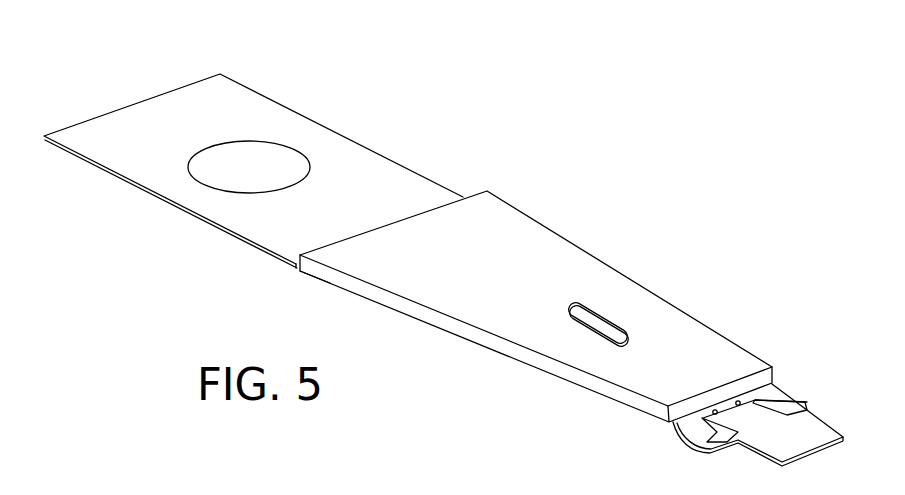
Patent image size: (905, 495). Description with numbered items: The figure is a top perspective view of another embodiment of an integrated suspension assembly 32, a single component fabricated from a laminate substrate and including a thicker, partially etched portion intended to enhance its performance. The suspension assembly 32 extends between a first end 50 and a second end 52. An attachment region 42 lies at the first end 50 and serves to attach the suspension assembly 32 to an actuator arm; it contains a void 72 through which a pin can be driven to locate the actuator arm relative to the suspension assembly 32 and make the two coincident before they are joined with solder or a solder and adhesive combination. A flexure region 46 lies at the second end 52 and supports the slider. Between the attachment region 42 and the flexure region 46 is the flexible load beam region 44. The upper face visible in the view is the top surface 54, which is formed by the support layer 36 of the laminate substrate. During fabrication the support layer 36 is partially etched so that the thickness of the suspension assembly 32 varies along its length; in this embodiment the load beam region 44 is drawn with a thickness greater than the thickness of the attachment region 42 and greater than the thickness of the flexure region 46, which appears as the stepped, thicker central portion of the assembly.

The suspension assembly 32 is at (128, 85).
The first end 50 is at (82, 121).
The attachment region 42 is at (130, 128).
The void 72 is at (252, 153).
The top surface 54 is at (507, 236).
The load beam region 44 is at (434, 270).
The support layer 36 is at (320, 272).
The flexure region 46 is at (798, 432).
The second end 52 is at (817, 453).